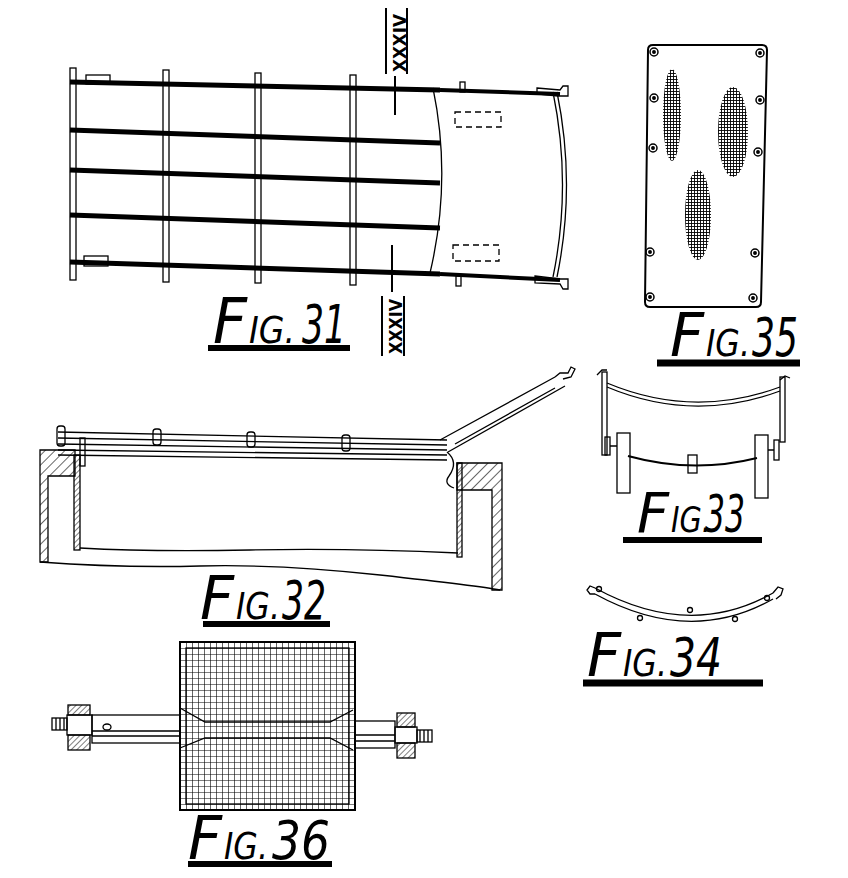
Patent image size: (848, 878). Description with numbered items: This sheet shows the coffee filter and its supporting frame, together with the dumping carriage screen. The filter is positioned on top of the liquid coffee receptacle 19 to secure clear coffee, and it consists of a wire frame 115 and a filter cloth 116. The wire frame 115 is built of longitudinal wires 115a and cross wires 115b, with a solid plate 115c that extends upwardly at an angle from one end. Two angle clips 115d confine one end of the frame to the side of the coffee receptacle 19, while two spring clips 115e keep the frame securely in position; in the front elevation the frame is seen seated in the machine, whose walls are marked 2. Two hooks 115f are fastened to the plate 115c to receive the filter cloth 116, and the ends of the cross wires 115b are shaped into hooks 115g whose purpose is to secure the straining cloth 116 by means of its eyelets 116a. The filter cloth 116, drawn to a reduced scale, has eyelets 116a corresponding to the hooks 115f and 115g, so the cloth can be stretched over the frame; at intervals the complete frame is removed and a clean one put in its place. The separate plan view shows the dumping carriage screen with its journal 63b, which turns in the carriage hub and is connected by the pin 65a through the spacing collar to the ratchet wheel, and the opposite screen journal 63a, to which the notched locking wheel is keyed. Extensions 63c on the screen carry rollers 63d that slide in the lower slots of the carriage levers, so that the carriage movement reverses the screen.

In FIG. 32, the wire frame 115 is at (202, 440).
In FIG. 31, the longitudinal wires 115a is at (219, 128).
In FIG. 34, the longitudinal wires 115a is at (692, 606).
In FIG. 31, the cross wires 115b is at (352, 166).
In FIG. 34, the cross wires 115b is at (638, 575).
In FIG. 31, the solid plate 115c is at (498, 182).
In FIG. 31, the angle clips 115d is at (96, 268).
In FIG. 32, the angle clips 115d is at (86, 458).
In FIG. 31, the spring clips 115e is at (478, 255).
In FIG. 32, the spring clips 115e is at (453, 477).
In FIG. 31, the hooks 115f is at (588, 268).
In FIG. 32, the hooks 115f is at (552, 379).
In FIG. 33, the hooks 115f is at (612, 362).
In FIG. 31, the hooks 115g is at (52, 292).
In FIG. 32, the hooks 115g is at (257, 431).
In FIG. 34, the hooks 115g is at (594, 588).
In FIG. 35, the filter cloth 116 is at (651, 125).
In FIG. 35, the eyelets 116a is at (766, 99).
In FIG. 32, the wall 2 is at (40, 505).
In FIG. 32, the liquid coffee receptacle 19 is at (80, 525).
In FIG. 36, the screen journal 63a is at (367, 724).
In FIG. 36, the journal 63b is at (127, 722).
In FIG. 36, the extensions 63c is at (402, 758).
In FIG. 36, the rollers 63d is at (416, 692).
In FIG. 36, the pin 65a is at (112, 730).